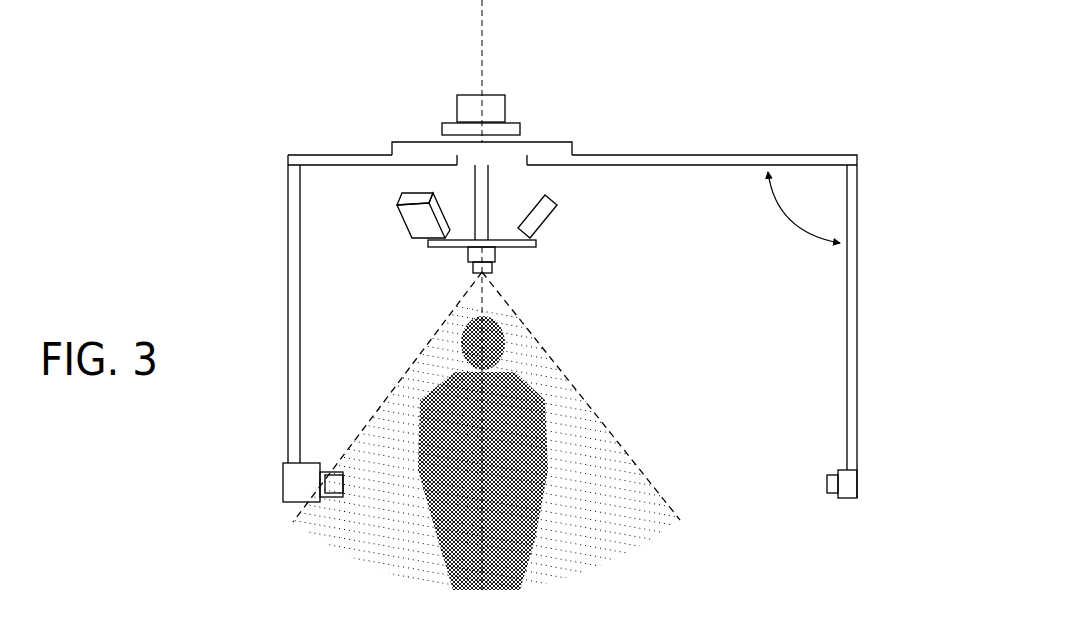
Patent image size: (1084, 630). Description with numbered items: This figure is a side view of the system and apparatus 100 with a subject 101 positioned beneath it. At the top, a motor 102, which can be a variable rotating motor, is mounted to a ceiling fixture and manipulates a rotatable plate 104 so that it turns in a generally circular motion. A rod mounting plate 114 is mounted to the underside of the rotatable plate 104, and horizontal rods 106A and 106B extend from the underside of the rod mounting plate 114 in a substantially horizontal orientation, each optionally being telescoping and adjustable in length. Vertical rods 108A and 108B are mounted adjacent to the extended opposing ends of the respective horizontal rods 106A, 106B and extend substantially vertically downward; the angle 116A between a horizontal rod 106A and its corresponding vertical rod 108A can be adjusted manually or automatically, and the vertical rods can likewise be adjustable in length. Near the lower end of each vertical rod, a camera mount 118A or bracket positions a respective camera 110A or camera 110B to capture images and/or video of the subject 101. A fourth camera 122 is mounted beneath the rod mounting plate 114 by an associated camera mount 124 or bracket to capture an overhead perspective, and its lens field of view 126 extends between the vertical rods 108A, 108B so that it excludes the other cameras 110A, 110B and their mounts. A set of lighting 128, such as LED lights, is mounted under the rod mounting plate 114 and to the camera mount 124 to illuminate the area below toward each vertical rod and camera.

The system and apparatus 100 is at (872, 134).
The subject 101 is at (483, 453).
The motor 102 is at (578, 107).
The rotatable plate 104 is at (555, 130).
The horizontal rod 106A is at (813, 154).
The horizontal rod 106B is at (333, 156).
The vertical rod 108A is at (848, 387).
The vertical rod 108B is at (300, 293).
The camera 110A is at (800, 470).
The camera 110B is at (363, 491).
The rod mounting plate 114 is at (570, 147).
The angle 116A is at (783, 221).
The camera mount 118A is at (282, 481).
The fourth camera 122 is at (510, 272).
The camera mount 124 is at (453, 247).
The lens field of view 126 is at (490, 450).
The lighting 128 is at (531, 220).